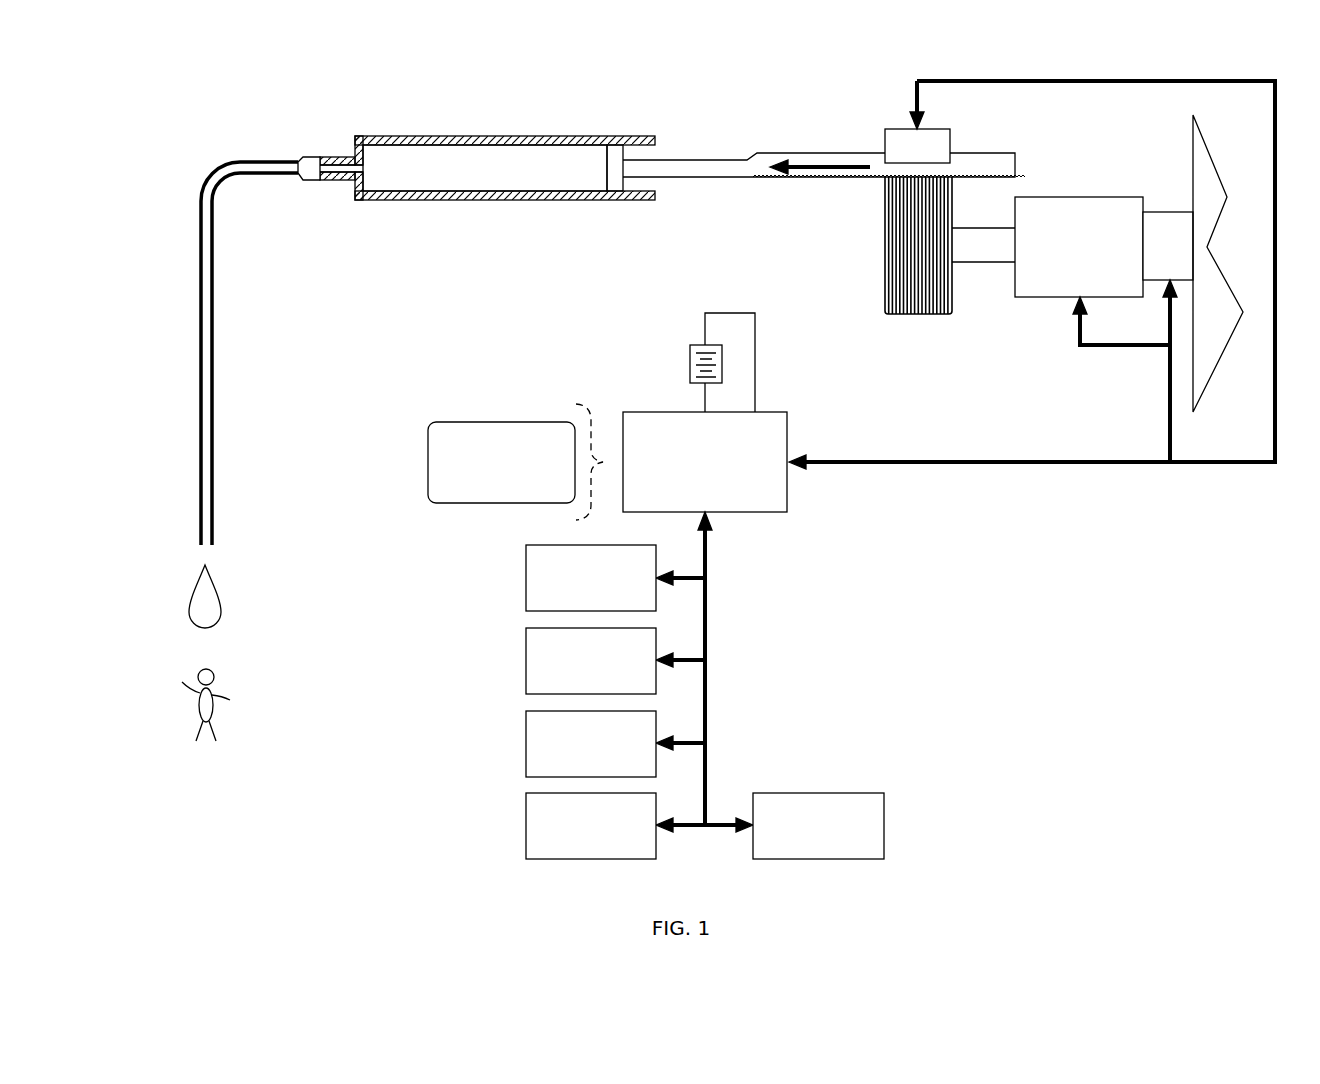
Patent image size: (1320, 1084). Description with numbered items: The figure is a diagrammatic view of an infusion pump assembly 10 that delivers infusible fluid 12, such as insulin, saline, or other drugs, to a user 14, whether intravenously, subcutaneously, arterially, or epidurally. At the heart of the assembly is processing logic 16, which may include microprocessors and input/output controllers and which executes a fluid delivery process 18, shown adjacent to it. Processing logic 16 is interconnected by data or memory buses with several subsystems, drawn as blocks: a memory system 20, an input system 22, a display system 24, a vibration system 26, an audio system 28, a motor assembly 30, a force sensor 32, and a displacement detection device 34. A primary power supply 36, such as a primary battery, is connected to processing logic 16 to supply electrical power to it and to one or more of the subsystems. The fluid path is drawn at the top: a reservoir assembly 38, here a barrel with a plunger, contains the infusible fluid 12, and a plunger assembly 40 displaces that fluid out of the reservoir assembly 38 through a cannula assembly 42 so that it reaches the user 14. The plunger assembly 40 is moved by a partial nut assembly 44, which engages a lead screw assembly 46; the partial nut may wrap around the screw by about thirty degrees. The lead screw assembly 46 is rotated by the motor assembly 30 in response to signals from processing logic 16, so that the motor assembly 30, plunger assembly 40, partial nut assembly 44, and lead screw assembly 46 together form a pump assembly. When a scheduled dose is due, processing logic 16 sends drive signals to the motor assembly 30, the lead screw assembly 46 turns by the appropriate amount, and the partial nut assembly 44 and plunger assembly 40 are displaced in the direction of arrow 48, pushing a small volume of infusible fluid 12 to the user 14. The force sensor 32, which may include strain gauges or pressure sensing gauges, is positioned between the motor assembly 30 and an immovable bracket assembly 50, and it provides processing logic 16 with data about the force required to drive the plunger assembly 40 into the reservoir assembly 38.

The infusion pump assembly 10 is at (172, 56).
The infusible fluid 12 is at (452, 170).
The user 14 is at (216, 708).
The processing logic 16 is at (705, 462).
The fluid delivery process 18 is at (515, 462).
The memory system 20 is at (526, 578).
The input system 22 is at (526, 661).
The display system 24 is at (526, 744).
The vibration system 26 is at (526, 826).
The audio system 28 is at (884, 826).
The motor assembly 30 is at (1079, 247).
The force sensor 32 is at (1168, 246).
The displacement detection device 34 is at (917, 146).
The primary power supply 36 is at (690, 362).
The reservoir assembly 38 is at (403, 137).
The plunger assembly 40 is at (612, 167).
The cannula assembly 42 is at (268, 158).
The partial nut assembly 44 is at (745, 160).
The lead screw assembly 46 is at (885, 270).
The arrow 48 is at (795, 165).
The bracket assembly 50 is at (1193, 178).